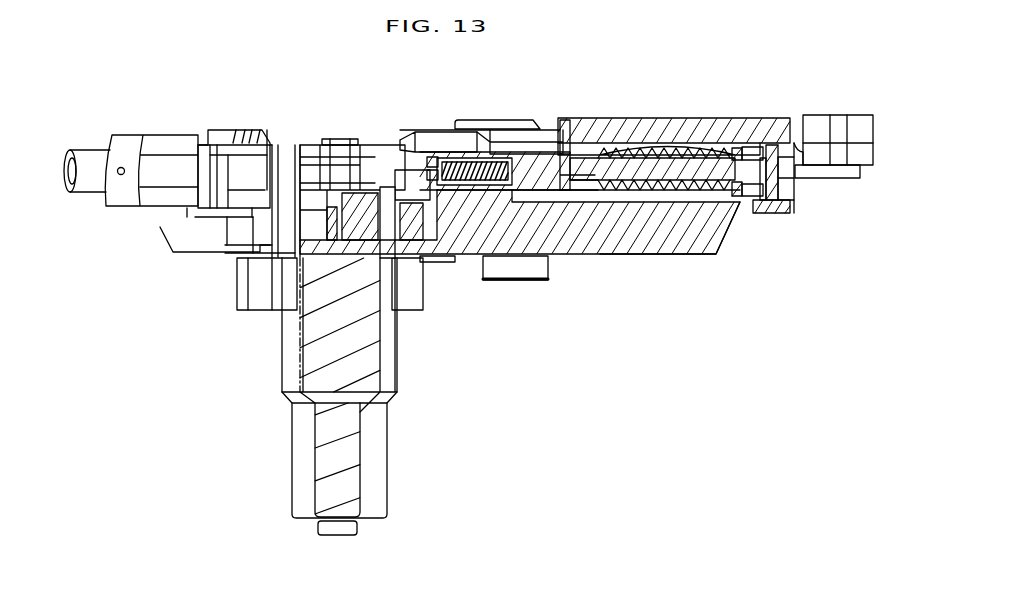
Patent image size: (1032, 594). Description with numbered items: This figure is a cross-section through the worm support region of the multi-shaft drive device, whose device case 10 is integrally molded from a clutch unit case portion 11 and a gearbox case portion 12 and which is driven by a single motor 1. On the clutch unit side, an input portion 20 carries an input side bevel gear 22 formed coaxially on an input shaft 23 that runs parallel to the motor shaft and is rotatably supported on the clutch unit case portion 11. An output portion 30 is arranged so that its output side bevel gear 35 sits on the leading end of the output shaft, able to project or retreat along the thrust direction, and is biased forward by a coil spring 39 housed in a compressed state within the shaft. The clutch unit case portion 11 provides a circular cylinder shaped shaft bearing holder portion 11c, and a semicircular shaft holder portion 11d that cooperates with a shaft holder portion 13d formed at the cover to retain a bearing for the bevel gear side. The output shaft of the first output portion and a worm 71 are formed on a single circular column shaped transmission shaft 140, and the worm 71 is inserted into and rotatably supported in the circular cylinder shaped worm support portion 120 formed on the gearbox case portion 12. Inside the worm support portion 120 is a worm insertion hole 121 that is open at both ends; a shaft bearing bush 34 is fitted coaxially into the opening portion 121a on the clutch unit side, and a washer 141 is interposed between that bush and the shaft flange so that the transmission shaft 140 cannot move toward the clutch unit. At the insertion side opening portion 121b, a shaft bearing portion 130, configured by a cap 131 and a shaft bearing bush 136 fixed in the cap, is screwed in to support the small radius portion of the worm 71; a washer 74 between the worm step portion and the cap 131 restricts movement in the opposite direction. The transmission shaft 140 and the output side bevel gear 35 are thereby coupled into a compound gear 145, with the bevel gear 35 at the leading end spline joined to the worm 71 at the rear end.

The motor 1 is at (397, 370).
The device case 10 is at (632, 256).
The clutch unit case portion 11 is at (206, 258).
The shaft bearing holder portion 11c is at (160, 148).
The shaft holder portion 11d is at (483, 230).
The gearbox case portion 12 is at (682, 256).
The shaft holder portion 13d is at (505, 150).
The input portion 20 is at (397, 248).
The input side bevel gear 22 is at (357, 190).
The input shaft 23 is at (408, 250).
The output portion 30 is at (522, 226).
The shaft bearing bush 34 is at (578, 252).
The output side bevel gear 35 is at (422, 132).
The coil spring 39 is at (481, 175).
The worm 71 is at (680, 170).
The washer 74 is at (750, 150).
The worm support portion 120 is at (688, 118).
The worm insertion hole 121 is at (715, 143).
The opening portion 121a is at (595, 230).
The insertion side opening portion 121b is at (796, 143).
The shaft bearing portion 130 is at (790, 202).
The cap 131 is at (768, 148).
The shaft bearing bush 136 is at (745, 195).
The transmission shaft 140 is at (538, 152).
The washer 141 is at (598, 254).
The compound gear 145 is at (566, 225).